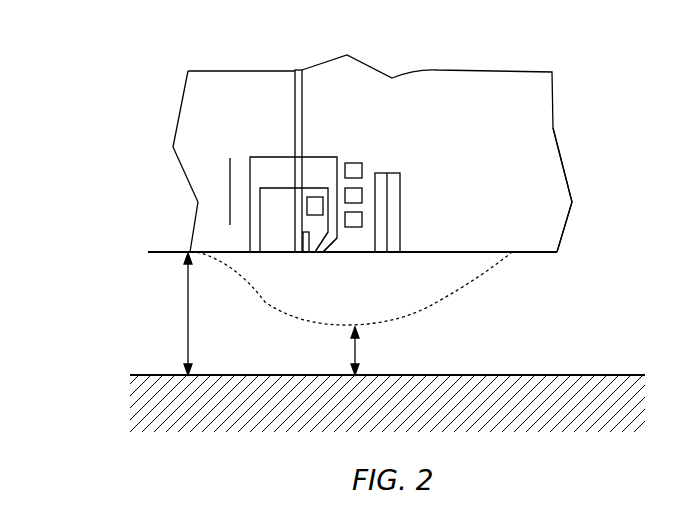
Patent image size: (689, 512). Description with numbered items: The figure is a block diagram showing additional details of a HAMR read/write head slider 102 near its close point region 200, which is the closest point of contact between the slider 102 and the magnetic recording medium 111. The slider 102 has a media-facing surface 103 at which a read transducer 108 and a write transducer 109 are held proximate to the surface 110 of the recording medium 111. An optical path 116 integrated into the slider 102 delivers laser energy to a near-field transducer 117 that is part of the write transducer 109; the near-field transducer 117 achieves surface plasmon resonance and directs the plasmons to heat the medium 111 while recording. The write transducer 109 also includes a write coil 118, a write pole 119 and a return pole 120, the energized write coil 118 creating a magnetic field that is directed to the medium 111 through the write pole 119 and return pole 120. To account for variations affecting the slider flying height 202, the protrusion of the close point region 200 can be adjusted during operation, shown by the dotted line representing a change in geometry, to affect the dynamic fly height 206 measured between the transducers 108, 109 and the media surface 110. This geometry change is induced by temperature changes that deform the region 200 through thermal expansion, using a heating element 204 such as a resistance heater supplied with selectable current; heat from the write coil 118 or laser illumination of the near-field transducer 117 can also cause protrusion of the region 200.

The read/write head slider 102 is at (128, 56).
The media-facing surface 103 is at (576, 240).
The read transducer 108 is at (397, 173).
The write transducer 109 is at (272, 287).
The surface of magnetic recording medium 110 is at (622, 375).
The magnetic recording medium 111 is at (558, 408).
The optical path 116 is at (294, 85).
The near-field transducer 117 is at (305, 252).
The write coil 118 is at (360, 162).
The write pole 119 is at (325, 250).
The return pole 120 is at (257, 37).
The close point region 200 is at (485, 308).
The slider flying height 202 is at (186, 314).
The heating element 204 is at (230, 177).
The dynamic fly height 206 is at (380, 351).